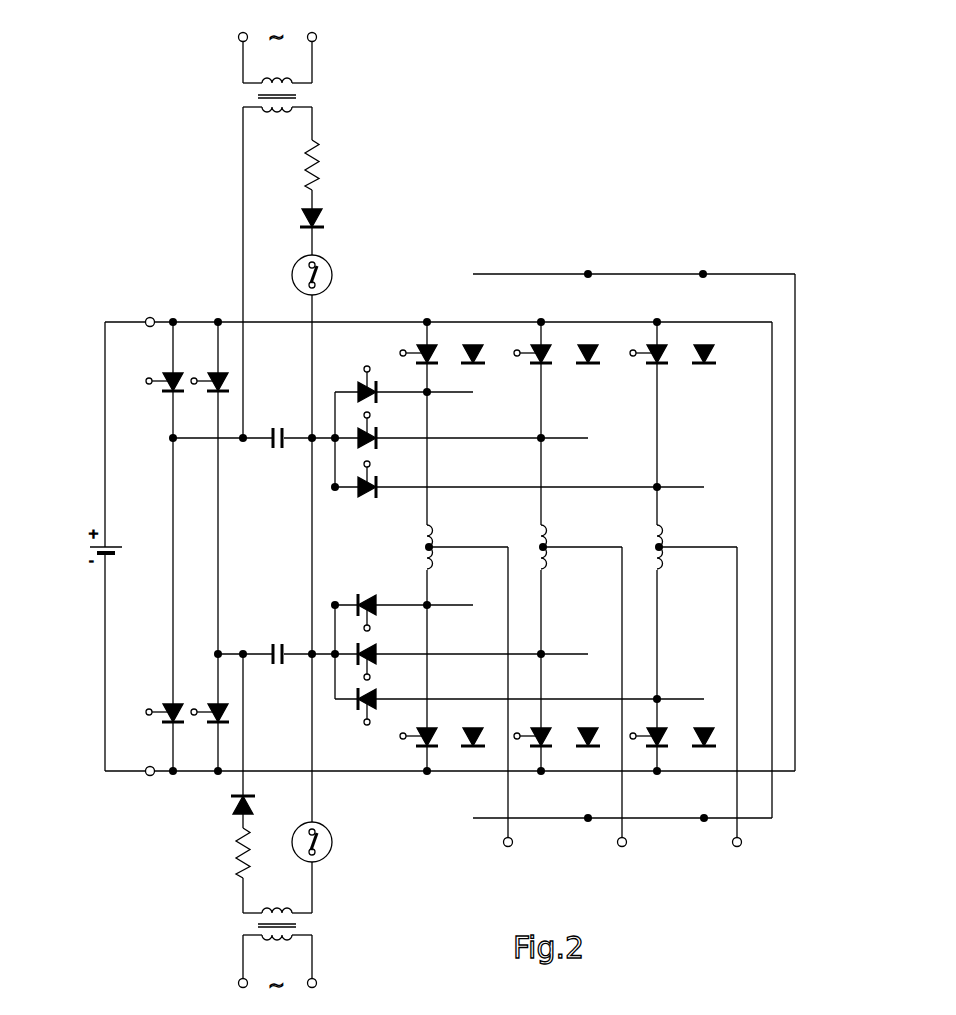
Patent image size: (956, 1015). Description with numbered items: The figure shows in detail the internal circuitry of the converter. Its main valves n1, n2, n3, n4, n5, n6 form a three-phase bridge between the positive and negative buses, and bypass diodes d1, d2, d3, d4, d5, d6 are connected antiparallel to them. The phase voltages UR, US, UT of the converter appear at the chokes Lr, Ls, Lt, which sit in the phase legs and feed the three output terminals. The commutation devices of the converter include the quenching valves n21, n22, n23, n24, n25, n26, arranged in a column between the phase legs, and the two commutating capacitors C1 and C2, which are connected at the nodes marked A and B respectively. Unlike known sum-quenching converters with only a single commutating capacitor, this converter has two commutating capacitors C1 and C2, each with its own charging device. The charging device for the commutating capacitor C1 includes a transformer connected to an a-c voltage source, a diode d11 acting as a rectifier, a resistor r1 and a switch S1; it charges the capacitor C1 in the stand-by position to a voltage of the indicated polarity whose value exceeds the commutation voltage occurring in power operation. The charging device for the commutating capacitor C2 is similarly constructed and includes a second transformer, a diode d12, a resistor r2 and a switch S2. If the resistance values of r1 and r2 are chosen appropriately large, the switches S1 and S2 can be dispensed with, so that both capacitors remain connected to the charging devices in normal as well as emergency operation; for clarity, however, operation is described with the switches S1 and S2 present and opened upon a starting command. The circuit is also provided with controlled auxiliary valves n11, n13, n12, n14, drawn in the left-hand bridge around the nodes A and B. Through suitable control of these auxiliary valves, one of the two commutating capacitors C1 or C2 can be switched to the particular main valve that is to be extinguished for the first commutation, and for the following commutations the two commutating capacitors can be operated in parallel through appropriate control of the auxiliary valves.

The resistor r1 is at (320, 158).
The diode d11 is at (322, 217).
The switch S1 is at (332, 273).
The controlled auxiliary valve n11 is at (170, 395).
The controlled auxiliary valve n13 is at (216, 395).
The controlled auxiliary valve n12 is at (170, 704).
The controlled auxiliary valve n14 is at (216, 704).
The commutating capacitor C1 is at (274, 450).
The commutating capacitor C2 is at (274, 643).
The node A is at (242, 465).
The node B is at (241, 640).
The diode d12 is at (235, 809).
The resistor r2 is at (236, 855).
The switch S2 is at (332, 840).
The main valve n1 is at (420, 347).
The main valve n2 is at (544, 748).
The main valve n3 is at (544, 365).
The main valve n4 is at (660, 748).
The main valve n5 is at (660, 365).
The main valve n6 is at (420, 748).
The bypass diode d1 is at (481, 364).
The bypass diode d2 is at (584, 729).
The bypass diode d3 is at (595, 364).
The bypass diode d4 is at (701, 729).
The bypass diode d5 is at (711, 364).
The bypass diode d6 is at (470, 729).
The quenching valve n21 is at (377, 401).
The quenching valve n22 is at (377, 663).
The quenching valve n23 is at (377, 447).
The quenching valve n24 is at (377, 708).
The quenching valve n25 is at (389, 497).
The quenching valve n26 is at (377, 614).
The choke Lr is at (420, 530).
The choke Ls is at (536, 530).
The choke Lt is at (652, 530).
The phase voltage UR is at (508, 859).
The phase voltage US is at (622, 859).
The phase voltage UT is at (737, 859).